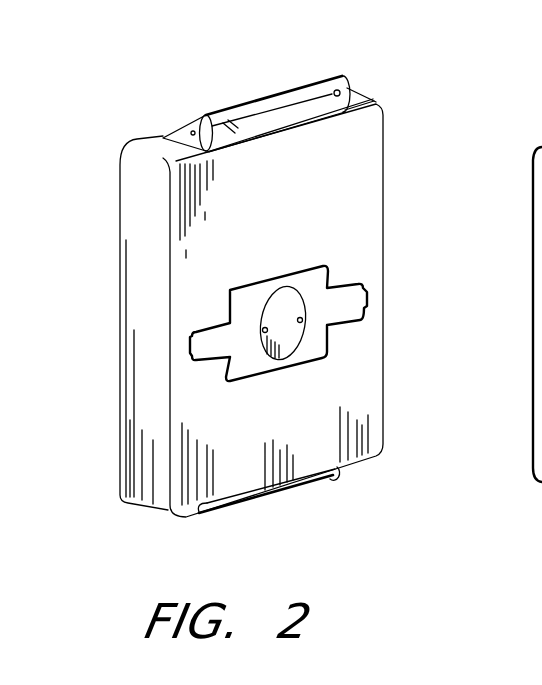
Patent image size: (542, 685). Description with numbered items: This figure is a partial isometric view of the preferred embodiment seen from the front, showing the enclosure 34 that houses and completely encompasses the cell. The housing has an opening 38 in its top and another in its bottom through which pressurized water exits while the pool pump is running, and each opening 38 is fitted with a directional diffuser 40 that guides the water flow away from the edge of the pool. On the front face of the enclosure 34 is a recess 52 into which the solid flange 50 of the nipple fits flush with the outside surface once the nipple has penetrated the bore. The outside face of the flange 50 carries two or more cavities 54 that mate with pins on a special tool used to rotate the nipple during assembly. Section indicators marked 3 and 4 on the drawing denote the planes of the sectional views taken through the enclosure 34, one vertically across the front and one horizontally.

The enclosure 34 is at (373, 100).
The opening 38 is at (210, 112).
The directional diffuser 40 is at (245, 98).
The flange 50 is at (252, 310).
The recess 52 is at (302, 290).
The cavity 54 is at (302, 322).
The section line 3- 3 is at (110, 373).
The section line 4- 4 is at (262, 83).